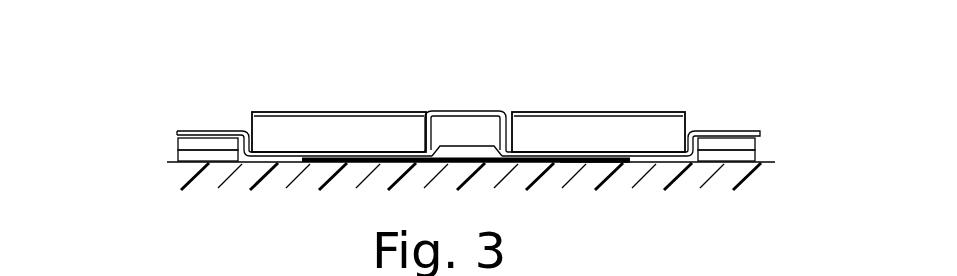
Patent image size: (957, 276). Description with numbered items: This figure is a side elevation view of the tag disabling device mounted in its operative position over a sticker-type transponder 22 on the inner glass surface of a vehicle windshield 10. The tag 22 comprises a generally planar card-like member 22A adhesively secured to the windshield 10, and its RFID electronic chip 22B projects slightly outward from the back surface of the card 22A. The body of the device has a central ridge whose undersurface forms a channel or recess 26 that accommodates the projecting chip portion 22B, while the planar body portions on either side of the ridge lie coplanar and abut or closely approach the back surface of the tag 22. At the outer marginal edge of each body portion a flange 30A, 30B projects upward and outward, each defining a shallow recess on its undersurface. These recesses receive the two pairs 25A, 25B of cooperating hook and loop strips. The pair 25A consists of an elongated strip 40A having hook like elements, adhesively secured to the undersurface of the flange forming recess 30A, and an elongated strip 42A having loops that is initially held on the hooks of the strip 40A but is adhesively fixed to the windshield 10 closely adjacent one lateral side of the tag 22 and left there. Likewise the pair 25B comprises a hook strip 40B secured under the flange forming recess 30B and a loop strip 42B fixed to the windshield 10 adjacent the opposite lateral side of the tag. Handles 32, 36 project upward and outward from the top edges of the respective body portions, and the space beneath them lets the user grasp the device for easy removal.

The windshield 10 is at (182, 171).
The transponder 22 is at (479, 157).
The card-like member 22A is at (601, 164).
The electronic chip 22B is at (480, 145).
The pair of cooperating hook and loop strips 25A is at (762, 134).
The pair of cooperating hook and loop strips 25B is at (176, 137).
The recess 26 is at (466, 111).
The flange 30A is at (719, 132).
The flange 30B is at (218, 130).
The handle 32 is at (610, 112).
The handle 36 is at (343, 112).
The elongated strip having hook like elements 40A is at (737, 144).
The elongated strip having hook like elements 40B is at (742, 156).
The elongated strip having loops 42A is at (203, 144).
The elongated strip having loops 42B is at (212, 155).